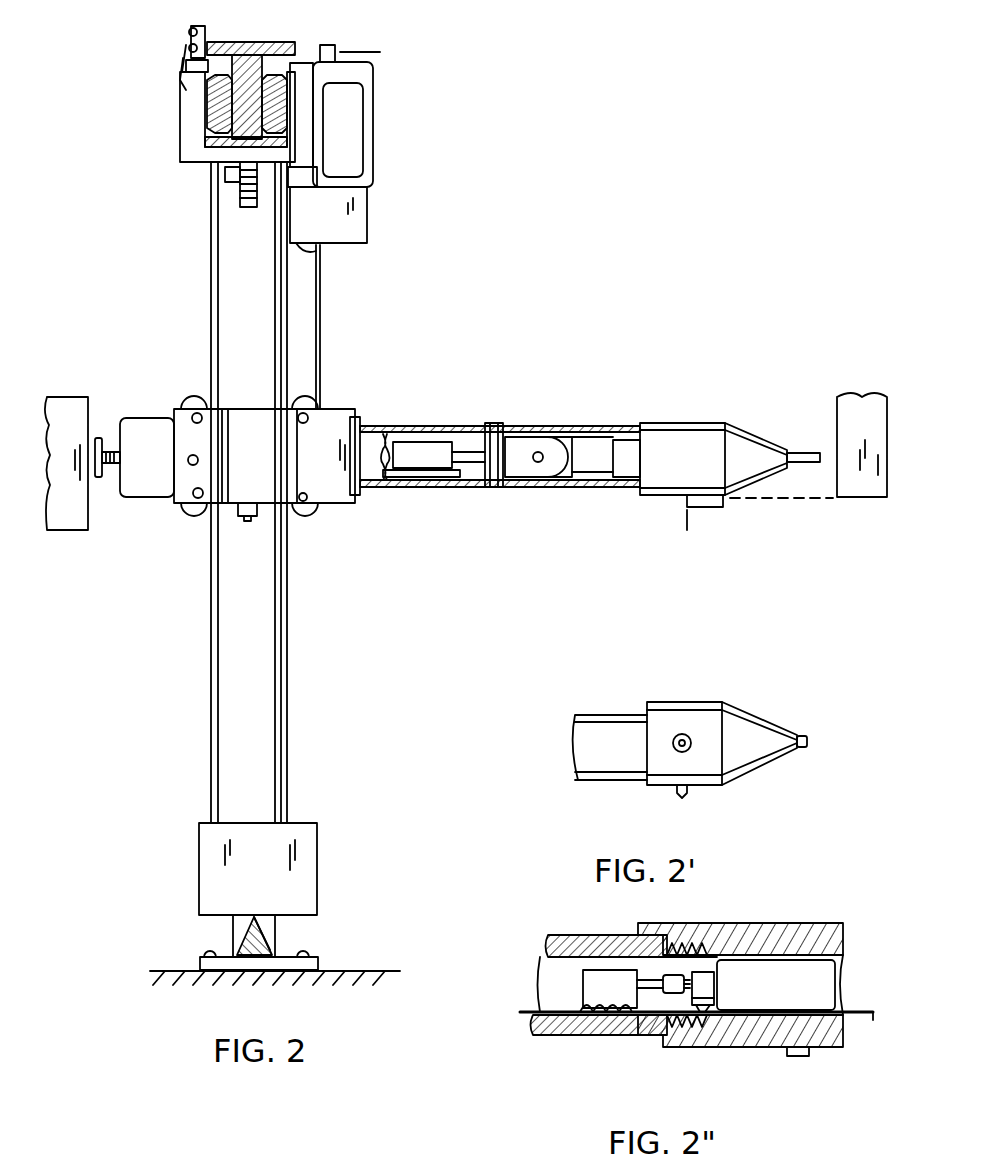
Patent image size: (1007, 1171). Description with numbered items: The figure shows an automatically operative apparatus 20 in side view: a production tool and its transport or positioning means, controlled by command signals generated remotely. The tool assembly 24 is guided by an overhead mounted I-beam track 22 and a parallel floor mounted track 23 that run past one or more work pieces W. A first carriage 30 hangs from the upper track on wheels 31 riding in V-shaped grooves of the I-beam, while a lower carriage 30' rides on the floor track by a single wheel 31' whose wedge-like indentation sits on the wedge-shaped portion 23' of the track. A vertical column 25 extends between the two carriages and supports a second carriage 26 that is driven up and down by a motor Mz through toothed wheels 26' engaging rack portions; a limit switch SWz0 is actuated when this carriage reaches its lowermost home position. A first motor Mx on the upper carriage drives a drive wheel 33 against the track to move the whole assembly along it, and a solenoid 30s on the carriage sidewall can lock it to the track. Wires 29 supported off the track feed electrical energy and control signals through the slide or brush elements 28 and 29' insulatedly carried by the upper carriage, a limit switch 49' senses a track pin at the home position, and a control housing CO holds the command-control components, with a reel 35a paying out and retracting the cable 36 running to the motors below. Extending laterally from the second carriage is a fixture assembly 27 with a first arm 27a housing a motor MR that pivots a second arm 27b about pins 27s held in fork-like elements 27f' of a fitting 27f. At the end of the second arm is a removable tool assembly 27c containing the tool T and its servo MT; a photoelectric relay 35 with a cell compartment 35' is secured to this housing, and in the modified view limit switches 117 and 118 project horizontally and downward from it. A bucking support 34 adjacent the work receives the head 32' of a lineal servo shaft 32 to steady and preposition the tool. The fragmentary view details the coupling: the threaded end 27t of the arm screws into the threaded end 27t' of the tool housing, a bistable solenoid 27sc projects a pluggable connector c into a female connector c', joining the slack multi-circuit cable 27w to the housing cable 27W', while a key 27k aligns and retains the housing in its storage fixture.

In FIG. 2, the automatically operative apparatus 20 is at (512, 141).
In FIG. 2, the overhead mounted track 22 is at (296, 48).
In FIG. 2, the floor mounted track 23 is at (275, 954).
In FIG. 2, the wedge-shaped upwardly extending portion 23' is at (343, 920).
In FIG. 2, the tool assembly 24 is at (310, 366).
In FIG. 2, the vertical fixture or column 25 is at (225, 368).
In FIG. 2, the second carriage 26 is at (249, 439).
In FIG. 2, the toothed wheels 26' is at (228, 481).
In FIG. 2, the fixture assembly 27 is at (399, 488).
In FIG. 2', the fixture assembly 27 is at (600, 732).
In FIG. 2'', the fixture assembly 27 is at (574, 946).
In FIG. 2, the first arm 27a is at (460, 488).
In FIG. 2, the second arm 27b is at (587, 488).
In FIG. 2, the tool assembly 27c is at (674, 424).
In FIG. 2', the tool assembly 27c is at (747, 712).
In FIG. 2'', the tool assembly 27c is at (772, 922).
In FIG. 2, the fitting 27f is at (467, 405).
In FIG. 2'', the fitting 27f is at (588, 1037).
In FIG. 2, the fork-like elements 27f' is at (529, 425).
In FIG. 2, the shaft or pins 27s is at (536, 463).
In FIG. 2'', the threaded end of arm 27t is at (706, 914).
In FIG. 2'', the threaded end of tool housing 27t' is at (711, 1064).
In FIG. 2'', the push-pull bistable solenoid 27sc is at (597, 982).
In FIG. 2'', the multi-circuit cable 27w is at (523, 1011).
In FIG. 2'', the cable of housing 27c 27W' is at (869, 1049).
In FIG. 2'', the key 27k is at (800, 1058).
In FIG. 2, the lever 28 is at (184, 70).
In FIG. 2, the wires 29 is at (164, 45).
In FIG. 2, the pivot pin 29' is at (226, 35).
In FIG. 2, the first carriage 30 is at (206, 117).
In FIG. 2, the lower carriage 30' is at (228, 862).
In FIG. 2, the solenoid 30s is at (382, 52).
In FIG. 2, the wheels 31 is at (205, 111).
In FIG. 2, the single wheel with wedge-like peripheral indentation 31' is at (207, 933).
In FIG. 2, the shaft of lineal servo 32 is at (114, 494).
In FIG. 2, the head 32' is at (114, 429).
In FIG. 2, the drive wheel 33 is at (240, 194).
In FIG. 2, the bucking means 34 is at (66, 412).
In FIG. 2, the photoelectric scanning relay 35 is at (665, 553).
In FIG. 2, the first housing or compartment 35' is at (684, 525).
In FIG. 2, the reel or retracter 35a is at (313, 258).
In FIG. 2, the electrical cable 36 is at (322, 308).
In FIG. 2, the limit switch 49' is at (129, 60).
In FIG. 2', the first limit switch 117 is at (681, 732).
In FIG. 2', the second limit switch 118 is at (690, 790).
In FIG. 2, the control housing CO is at (332, 227).
In FIG. 2, the first motor Mx is at (352, 100).
In FIG. 2, the motor for carriage 26 Mz is at (147, 457).
In FIG. 2, the motor within arm 27a MR is at (434, 444).
In FIG. 2, the tool servo MT is at (624, 442).
In FIG. 2'', the tool servo MT is at (776, 985).
In FIG. 2, the control limit switch SWz0 is at (255, 520).
In FIG. 2, the tool T is at (812, 459).
In FIG. 2', the tool T is at (810, 736).
In FIG. 2, the work pieces or assemblies W is at (851, 396).
In FIG. 2'', the pluggable electrical connector c is at (647, 1025).
In FIG. 2'', the female electrical connector c' is at (685, 1035).